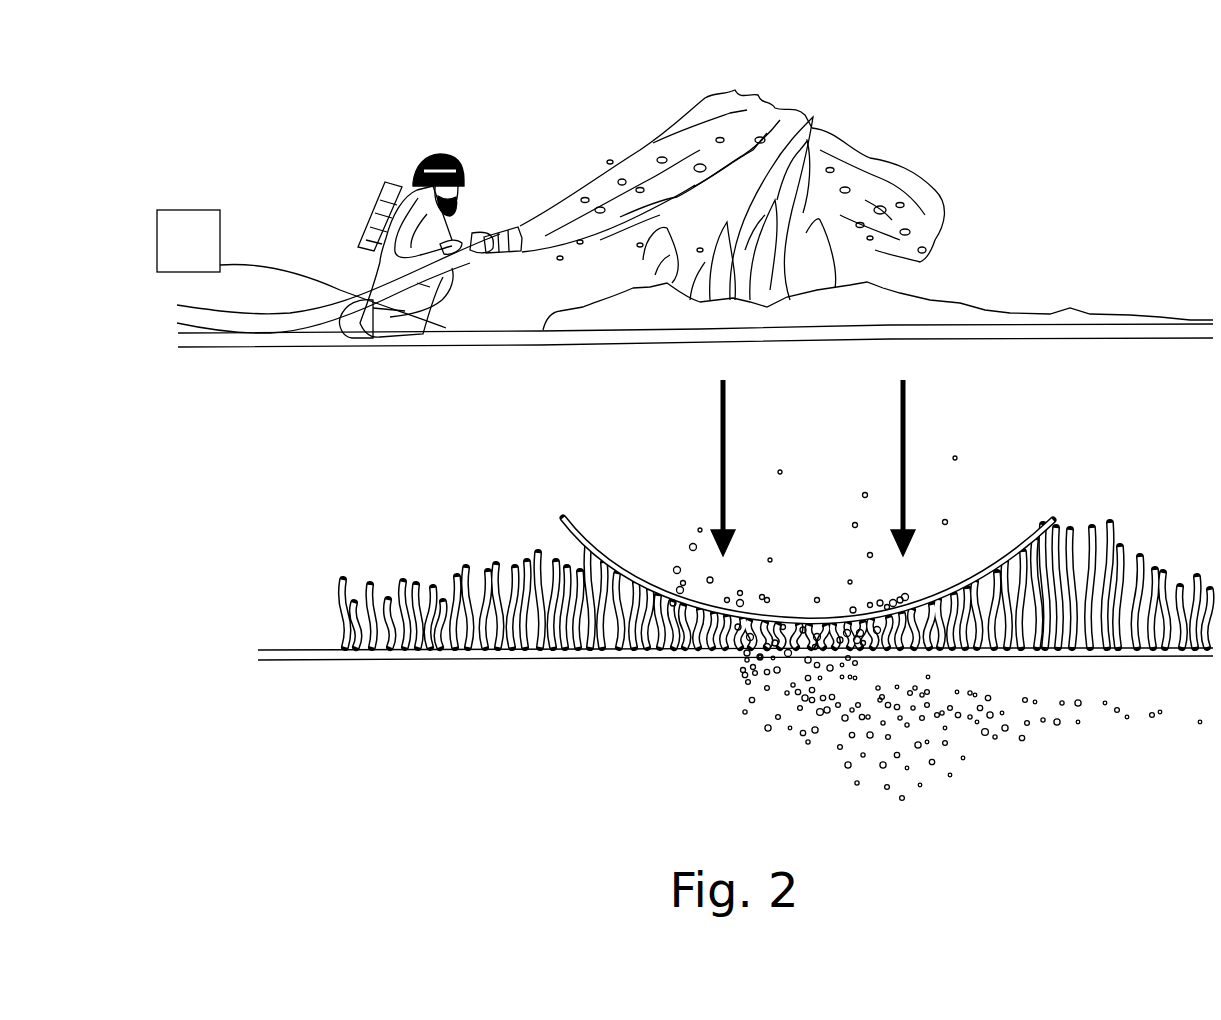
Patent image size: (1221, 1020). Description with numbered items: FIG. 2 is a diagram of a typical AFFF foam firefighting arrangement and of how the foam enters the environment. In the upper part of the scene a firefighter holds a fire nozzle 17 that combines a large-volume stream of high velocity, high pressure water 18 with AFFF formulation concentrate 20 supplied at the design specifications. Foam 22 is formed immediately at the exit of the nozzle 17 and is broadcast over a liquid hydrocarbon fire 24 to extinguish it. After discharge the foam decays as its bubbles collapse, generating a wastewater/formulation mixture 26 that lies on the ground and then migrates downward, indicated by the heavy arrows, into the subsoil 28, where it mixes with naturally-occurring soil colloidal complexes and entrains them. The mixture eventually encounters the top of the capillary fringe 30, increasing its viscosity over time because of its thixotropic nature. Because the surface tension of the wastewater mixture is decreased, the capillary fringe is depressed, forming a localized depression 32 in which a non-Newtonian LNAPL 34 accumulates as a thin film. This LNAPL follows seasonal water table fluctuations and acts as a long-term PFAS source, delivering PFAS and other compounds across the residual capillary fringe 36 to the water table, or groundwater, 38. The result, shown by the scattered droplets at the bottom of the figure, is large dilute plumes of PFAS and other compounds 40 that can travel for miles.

The fire nozzle 17 is at (466, 236).
The high velocity/high pressure water 18 is at (257, 322).
The AFFF formulation concentrate 20 is at (212, 204).
The foam 22 is at (712, 90).
The liquid hydrocarbon fire 24 is at (770, 182).
The wastewater/formulation mixture 26 is at (1062, 306).
The subsoil 28 is at (839, 457).
The capillary fringe 30 is at (408, 568).
The localized depression 32 is at (615, 552).
The non-Newtonian LNAPL 34 is at (815, 612).
The residual capillary fringe 36 is at (811, 645).
The water table (groundwater) 38 is at (597, 665).
The plumes of PFAS and other compounds 40 is at (1045, 735).